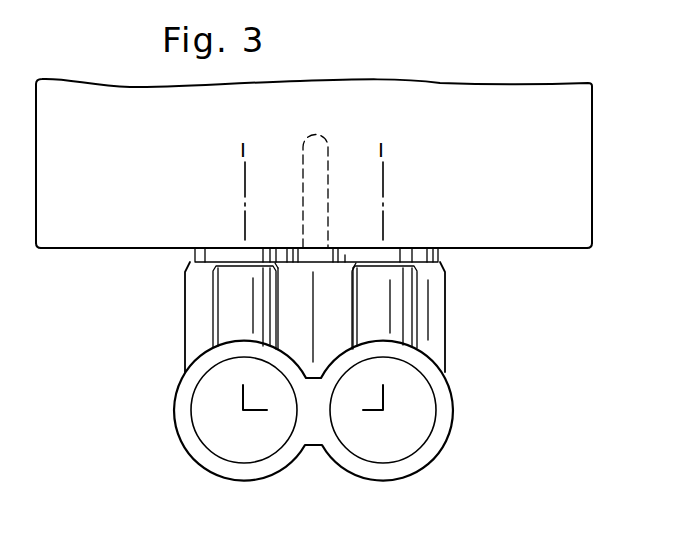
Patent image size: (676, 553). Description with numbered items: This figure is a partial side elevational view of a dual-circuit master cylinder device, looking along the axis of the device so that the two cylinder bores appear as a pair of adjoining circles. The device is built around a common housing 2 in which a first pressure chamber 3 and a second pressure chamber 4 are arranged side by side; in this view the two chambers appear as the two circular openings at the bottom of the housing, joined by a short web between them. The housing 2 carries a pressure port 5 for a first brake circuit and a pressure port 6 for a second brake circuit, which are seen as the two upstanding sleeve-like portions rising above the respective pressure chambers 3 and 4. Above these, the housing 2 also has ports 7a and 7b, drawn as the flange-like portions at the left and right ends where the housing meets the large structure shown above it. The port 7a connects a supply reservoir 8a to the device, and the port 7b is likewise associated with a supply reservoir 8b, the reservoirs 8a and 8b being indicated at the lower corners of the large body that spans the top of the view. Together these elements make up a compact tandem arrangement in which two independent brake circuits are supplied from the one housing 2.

The housing 2 is at (200, 308).
The first pressure chamber 3 is at (250, 447).
The second pressure chamber 4 is at (393, 445).
The pressure port 5 is at (233, 325).
The pressure port 6 is at (398, 318).
The port 7a is at (193, 258).
The port 7b is at (435, 260).
The supply reservoir 8a is at (118, 222).
The supply reservoir 8b is at (518, 225).